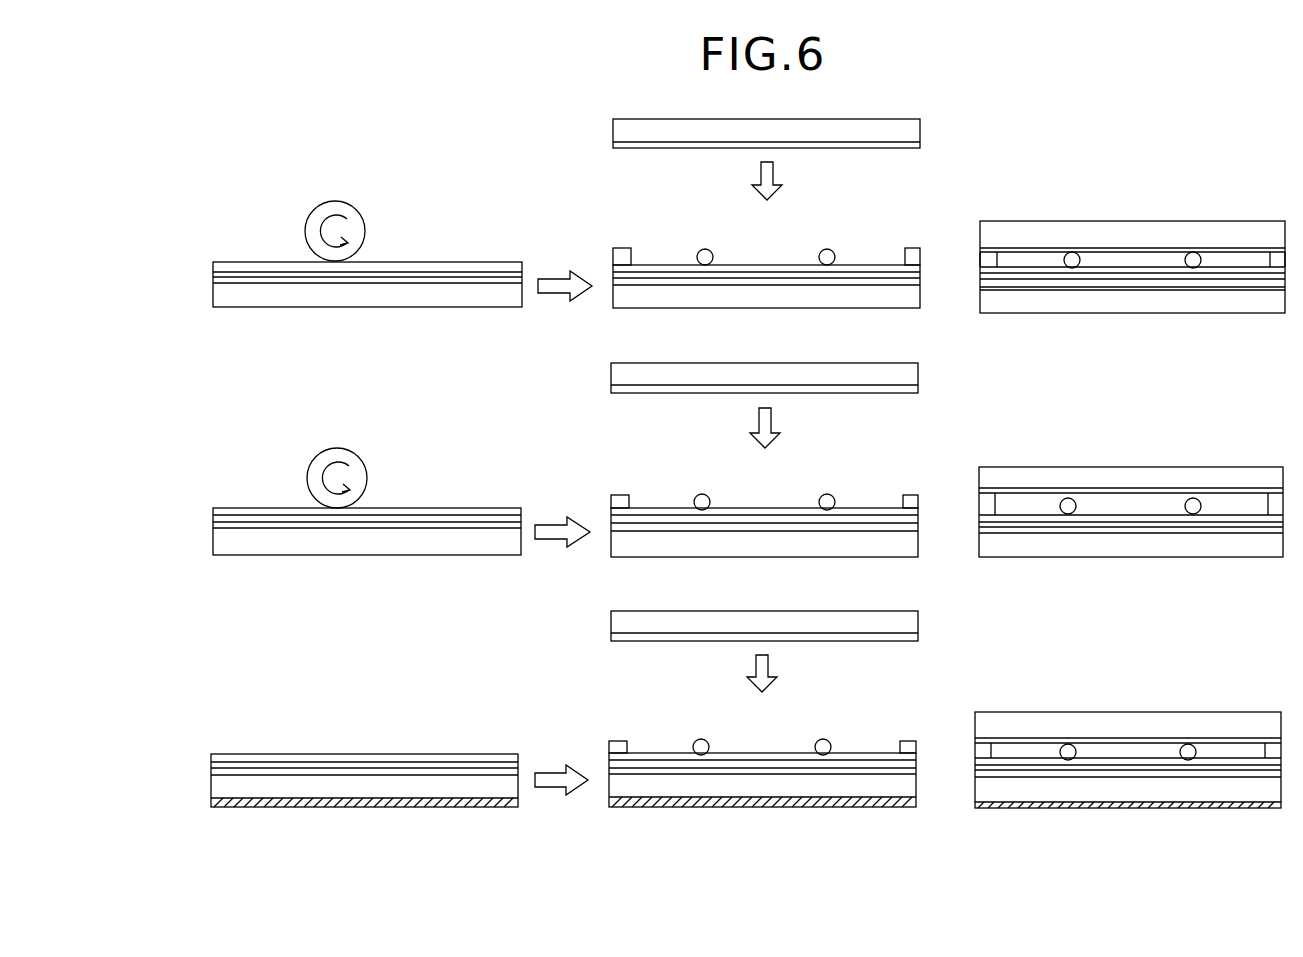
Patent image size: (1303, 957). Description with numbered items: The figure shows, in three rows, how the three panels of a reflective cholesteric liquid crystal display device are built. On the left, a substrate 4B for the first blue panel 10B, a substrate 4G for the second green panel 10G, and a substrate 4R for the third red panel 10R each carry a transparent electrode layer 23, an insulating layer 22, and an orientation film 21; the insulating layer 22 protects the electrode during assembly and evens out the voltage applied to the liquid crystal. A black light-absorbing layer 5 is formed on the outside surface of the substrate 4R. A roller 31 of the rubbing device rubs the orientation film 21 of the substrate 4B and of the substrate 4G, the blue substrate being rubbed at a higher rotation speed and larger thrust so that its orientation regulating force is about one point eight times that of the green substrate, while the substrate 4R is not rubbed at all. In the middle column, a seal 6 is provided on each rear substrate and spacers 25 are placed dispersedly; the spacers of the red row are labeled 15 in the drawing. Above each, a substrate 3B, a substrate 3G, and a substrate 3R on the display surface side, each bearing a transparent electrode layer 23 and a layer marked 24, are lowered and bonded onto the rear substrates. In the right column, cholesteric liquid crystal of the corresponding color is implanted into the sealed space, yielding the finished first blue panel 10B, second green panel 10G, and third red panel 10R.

The orientation film 21 is at (213, 262).
The insulating layer 22 is at (213, 274).
The transparent electrode layer 23 is at (213, 280).
The electrode layer on counter substrate 24 is at (613, 145).
The spacers 25 is at (835, 250).
The spacer beads 15 is at (831, 743).
The roller 31 is at (360, 213).
The substrate 4B is at (213, 295).
The substrate 4G is at (213, 544).
The substrate 4R is at (211, 790).
The substrate 3B is at (633, 119).
The substrate 3G is at (611, 370).
The substrate 3R is at (611, 618).
The seal 6 is at (621, 248).
The black light-absorbing layer 5 is at (245, 807).
The first blue panel 10B is at (1252, 195).
The second green panel 10G is at (1246, 446).
The third red panel 10R is at (1243, 692).